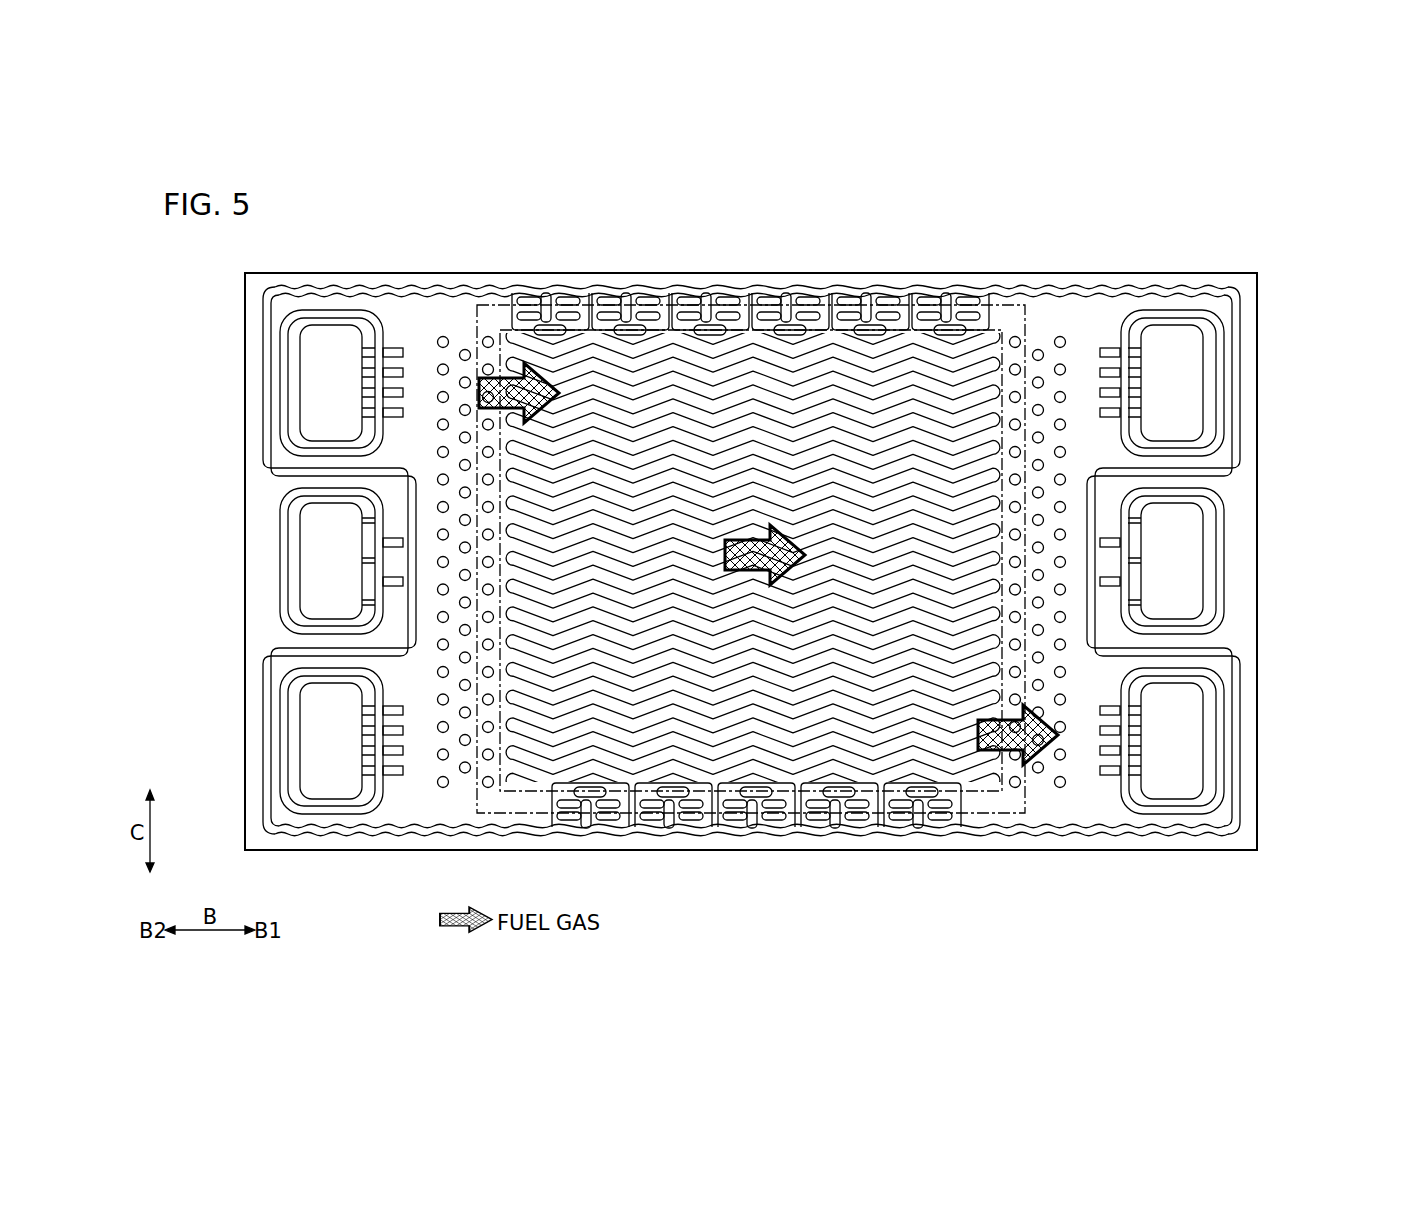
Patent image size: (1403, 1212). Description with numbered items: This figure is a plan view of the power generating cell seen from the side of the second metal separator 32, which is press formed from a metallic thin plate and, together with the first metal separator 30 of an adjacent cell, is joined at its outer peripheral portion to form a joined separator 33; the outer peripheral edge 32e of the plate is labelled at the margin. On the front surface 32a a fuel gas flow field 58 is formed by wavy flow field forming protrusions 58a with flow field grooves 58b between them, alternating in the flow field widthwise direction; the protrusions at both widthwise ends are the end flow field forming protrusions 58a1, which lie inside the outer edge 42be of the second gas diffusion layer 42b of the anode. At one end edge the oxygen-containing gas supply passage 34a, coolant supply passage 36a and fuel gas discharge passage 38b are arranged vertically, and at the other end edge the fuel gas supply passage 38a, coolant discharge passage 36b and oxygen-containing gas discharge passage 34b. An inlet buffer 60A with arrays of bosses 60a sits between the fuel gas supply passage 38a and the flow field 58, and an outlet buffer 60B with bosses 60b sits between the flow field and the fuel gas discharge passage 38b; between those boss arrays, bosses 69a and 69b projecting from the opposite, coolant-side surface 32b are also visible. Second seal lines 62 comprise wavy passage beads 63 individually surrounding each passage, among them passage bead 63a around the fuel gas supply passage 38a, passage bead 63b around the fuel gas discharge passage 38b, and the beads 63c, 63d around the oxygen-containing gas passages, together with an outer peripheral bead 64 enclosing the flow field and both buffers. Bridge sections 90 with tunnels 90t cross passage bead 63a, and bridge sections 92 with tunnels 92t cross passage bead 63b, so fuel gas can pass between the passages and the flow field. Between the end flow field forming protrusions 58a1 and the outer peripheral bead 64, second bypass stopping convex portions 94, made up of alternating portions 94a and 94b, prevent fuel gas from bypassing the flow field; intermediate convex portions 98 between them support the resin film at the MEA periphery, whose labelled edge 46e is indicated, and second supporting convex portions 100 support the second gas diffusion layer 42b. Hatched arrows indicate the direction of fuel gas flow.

The first metal separator 30 is at (630, 266).
The second metal separator 32 is at (610, 266).
The front surface 32a is at (516, 296).
The surface on opposite side 32b is at (571, 293).
The outer peripheral edge 32e is at (262, 292).
The joined separator 33 is at (1208, 206).
The oxygen-containing gas supply passage 34a is at (1185, 368).
The oxygen-containing gas discharge passage 34b is at (318, 722).
The coolant supply passage 36a is at (1190, 540).
The coolant discharge passage 36b is at (310, 542).
The fuel gas supply passage 38a is at (318, 352).
The fuel gas discharge passage 38b is at (1190, 722).
The second gas diffusion layer 42b is at (486, 296).
The outer edge 42be is at (537, 292).
The end of coolant flow field 46e is at (975, 795).
The fuel gas flow field 58 is at (742, 223).
The flow field forming protrusions 58a is at (690, 370).
The end flow field forming protrusions 58a1 is at (937, 345).
The flow field grooves 58b is at (718, 360).
The inlet buffer 60A is at (488, 617).
The bosses 60a is at (443, 562).
The outlet buffer 60B is at (1015, 644).
The bosses 60b is at (1015, 562).
The second seal lines 62 is at (1143, 903).
The passage beads 63 is at (282, 507).
The passage bead 63a is at (283, 366).
The passage bead 63b is at (1200, 818).
The oxygen-containing gas supply passage bead 63c is at (1220, 347).
The oxygen-containing gas discharge passage bead 63d is at (283, 766).
The outer peripheral bead 64 is at (1155, 838).
The bosses 69a is at (465, 350).
The bosses 69b is at (1038, 350).
The bridge sections 90 is at (404, 320).
The tunnels 90t is at (400, 372).
The bridge sections 92 is at (399, 798).
The tunnels 92t is at (1110, 775).
The second bypass stopping convex portions 94 is at (922, 805).
The second bypass stopping convex portions 94a is at (772, 318).
The second bypass stopping convex portions 94b is at (845, 303).
The intermediate convex portions 98 is at (888, 322).
The second supporting convex portions 100 is at (791, 330).